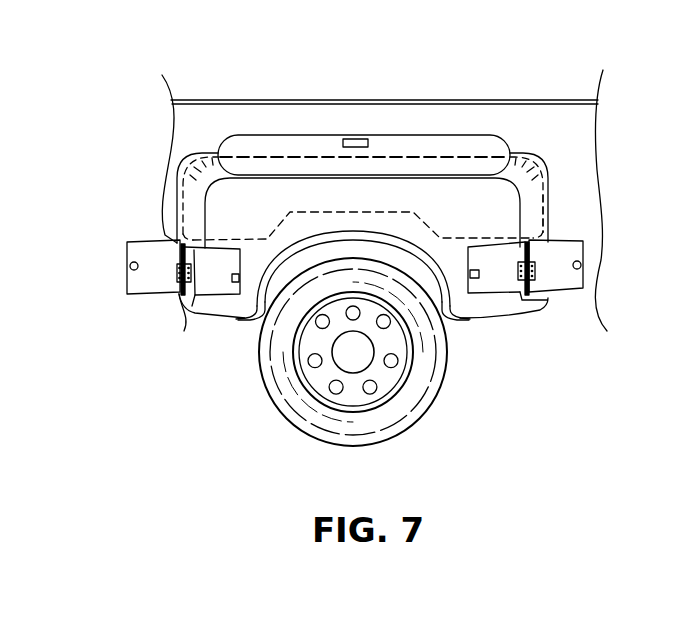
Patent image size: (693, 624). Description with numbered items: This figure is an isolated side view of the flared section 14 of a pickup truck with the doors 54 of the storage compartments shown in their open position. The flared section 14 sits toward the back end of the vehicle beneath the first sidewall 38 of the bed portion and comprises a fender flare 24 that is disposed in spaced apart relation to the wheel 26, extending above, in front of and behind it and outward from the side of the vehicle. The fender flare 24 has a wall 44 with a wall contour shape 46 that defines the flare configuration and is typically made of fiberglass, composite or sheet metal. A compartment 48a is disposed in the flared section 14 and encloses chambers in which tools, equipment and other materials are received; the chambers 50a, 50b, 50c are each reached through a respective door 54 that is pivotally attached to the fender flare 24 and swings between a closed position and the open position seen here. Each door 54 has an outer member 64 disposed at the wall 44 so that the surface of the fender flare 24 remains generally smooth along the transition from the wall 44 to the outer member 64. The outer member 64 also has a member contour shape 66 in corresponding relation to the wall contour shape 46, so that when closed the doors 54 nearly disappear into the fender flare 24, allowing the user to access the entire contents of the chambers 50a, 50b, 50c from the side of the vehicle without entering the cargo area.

The flared section 14 is at (542, 155).
The fender flare 24 is at (368, 193).
The wheel 26 is at (310, 447).
The first sidewall 38 is at (178, 118).
The wall 44 is at (190, 190).
The wall contour shape 46 is at (193, 220).
The compartment 48a is at (547, 207).
The chamber 50a is at (412, 160).
The chamber 50b is at (213, 270).
The chamber 50c is at (495, 270).
The door 54 is at (310, 145).
The outer member 64 is at (153, 273).
The member contour shape 66 is at (168, 277).